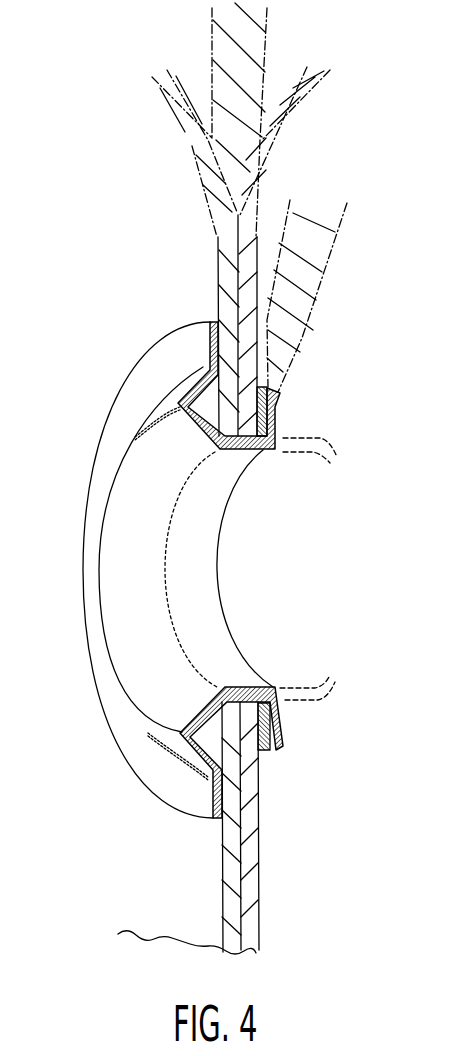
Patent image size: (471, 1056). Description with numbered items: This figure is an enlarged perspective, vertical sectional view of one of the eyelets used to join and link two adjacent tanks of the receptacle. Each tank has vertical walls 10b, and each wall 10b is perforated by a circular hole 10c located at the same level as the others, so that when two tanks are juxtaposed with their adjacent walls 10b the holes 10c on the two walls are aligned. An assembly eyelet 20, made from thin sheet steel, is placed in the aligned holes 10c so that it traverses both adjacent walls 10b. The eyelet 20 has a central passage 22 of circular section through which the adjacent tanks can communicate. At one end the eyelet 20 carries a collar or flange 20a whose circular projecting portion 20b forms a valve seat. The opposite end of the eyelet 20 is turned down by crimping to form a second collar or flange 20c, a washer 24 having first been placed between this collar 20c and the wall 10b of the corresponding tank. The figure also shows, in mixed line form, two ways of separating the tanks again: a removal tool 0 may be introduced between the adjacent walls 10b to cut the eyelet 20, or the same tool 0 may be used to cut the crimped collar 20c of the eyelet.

The removal tool 0 is at (213, 47).
The vertical wall 10b is at (232, 865).
The circular hole 10c is at (240, 688).
The assembly eyelet 20 is at (212, 594).
The collar or flange 20a is at (197, 338).
The circular projecting portion 20b is at (135, 437).
The collar or flange 20c is at (280, 418).
The central passage 22 is at (223, 553).
The washer 24 is at (272, 750).